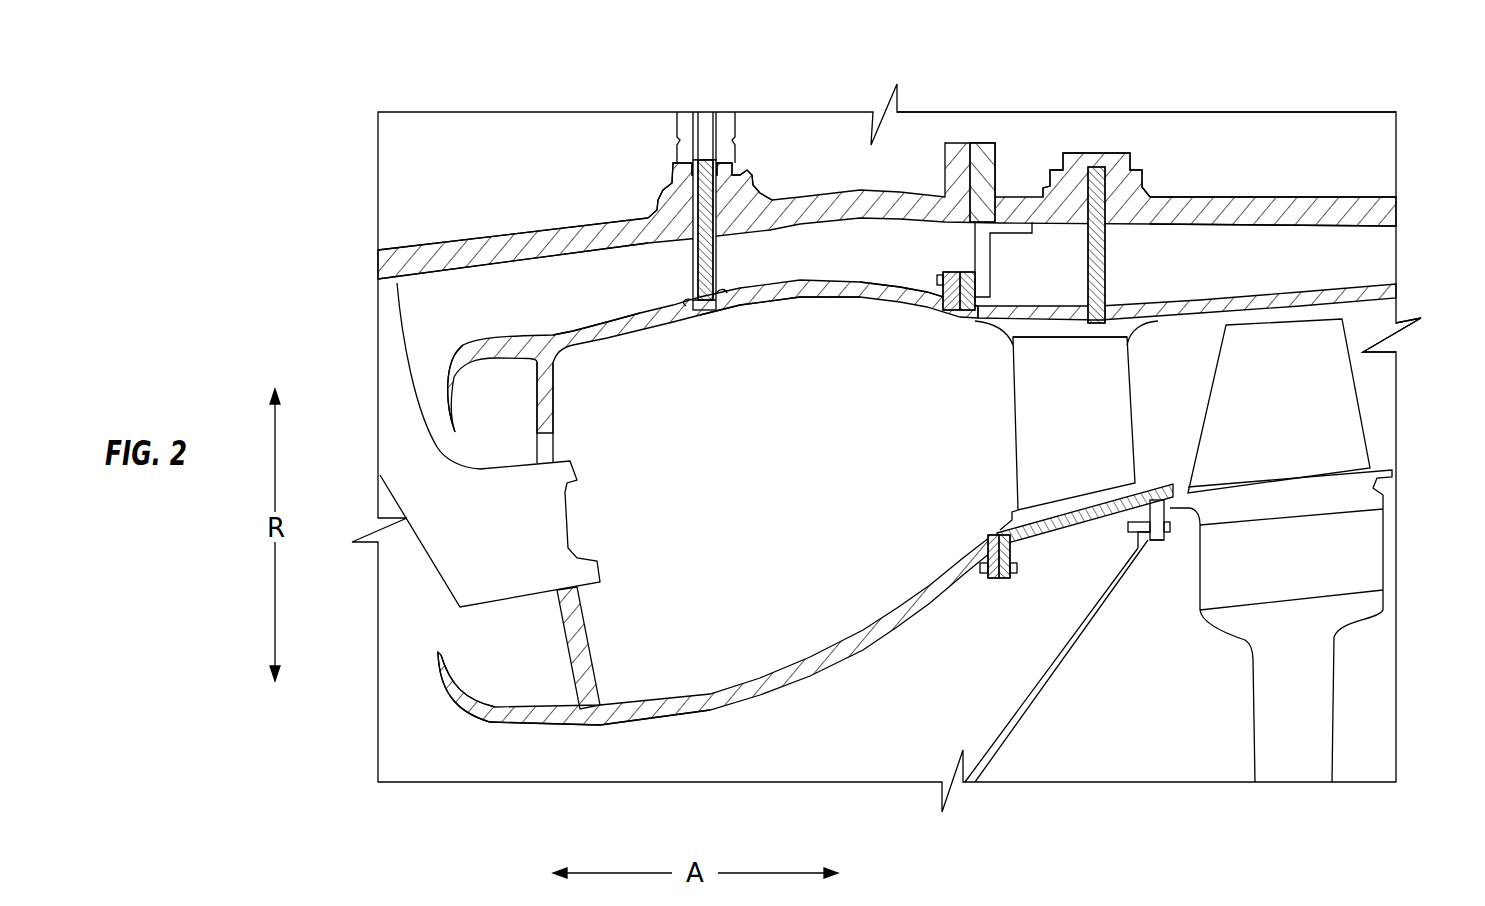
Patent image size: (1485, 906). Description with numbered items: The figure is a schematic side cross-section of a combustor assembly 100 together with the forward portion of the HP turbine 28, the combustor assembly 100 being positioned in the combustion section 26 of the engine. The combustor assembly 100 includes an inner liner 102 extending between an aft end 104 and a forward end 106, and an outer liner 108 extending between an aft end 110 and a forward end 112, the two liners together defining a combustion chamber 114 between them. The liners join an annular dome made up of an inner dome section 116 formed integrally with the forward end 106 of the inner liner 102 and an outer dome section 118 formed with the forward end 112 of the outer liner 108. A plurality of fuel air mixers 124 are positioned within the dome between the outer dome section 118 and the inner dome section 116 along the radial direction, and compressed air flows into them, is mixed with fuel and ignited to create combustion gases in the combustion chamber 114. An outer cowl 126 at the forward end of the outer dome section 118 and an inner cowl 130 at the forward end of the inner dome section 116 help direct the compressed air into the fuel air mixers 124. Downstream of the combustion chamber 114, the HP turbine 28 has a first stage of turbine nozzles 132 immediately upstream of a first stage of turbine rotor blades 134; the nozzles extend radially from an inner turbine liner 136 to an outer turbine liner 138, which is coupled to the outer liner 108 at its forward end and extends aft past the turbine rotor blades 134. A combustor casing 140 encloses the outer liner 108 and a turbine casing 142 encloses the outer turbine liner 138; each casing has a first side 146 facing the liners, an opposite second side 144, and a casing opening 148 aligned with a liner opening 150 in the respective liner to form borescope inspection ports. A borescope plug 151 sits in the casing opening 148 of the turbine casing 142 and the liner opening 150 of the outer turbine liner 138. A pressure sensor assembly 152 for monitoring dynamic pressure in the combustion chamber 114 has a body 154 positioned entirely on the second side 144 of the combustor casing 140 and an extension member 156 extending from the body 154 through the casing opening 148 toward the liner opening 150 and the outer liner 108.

The combustion section 26 is at (1084, 130).
The HP turbine 28 is at (1294, 254).
The combustor assembly 100 is at (907, 250).
The inner liner 102 is at (806, 672).
The aft end of inner liner 104 is at (984, 588).
The forward end of inner liner 106 is at (600, 740).
The outer liner 108 is at (803, 284).
The aft end of outer liner 110 is at (930, 318).
The forward end of outer liner 112 is at (577, 320).
The combustion chamber 114 is at (772, 494).
The inner dome section 116 is at (432, 700).
The outer dome section 118 is at (430, 346).
The fuel air mixer 124 is at (447, 560).
The outer cowl 126 is at (457, 378).
The inner cowl 130 is at (455, 720).
The first stage of turbine nozzles 132 is at (1037, 446).
The first stage of turbine rotor blades 134 is at (1311, 350).
The inner turbine liner 136 is at (1068, 528).
The outer turbine liner 138 is at (1030, 323).
The combustor casing 140 is at (517, 246).
The turbine casing 142 is at (1190, 207).
The second side 144 is at (488, 230).
The first side 146 is at (605, 265).
The casing opening 148 is at (720, 225).
The liner opening 150 is at (708, 320).
The borescope plug 151 is at (1088, 248).
The pressure sensor assembly 152 is at (666, 141).
The body 154 is at (735, 126).
The extension member 156 is at (716, 250).